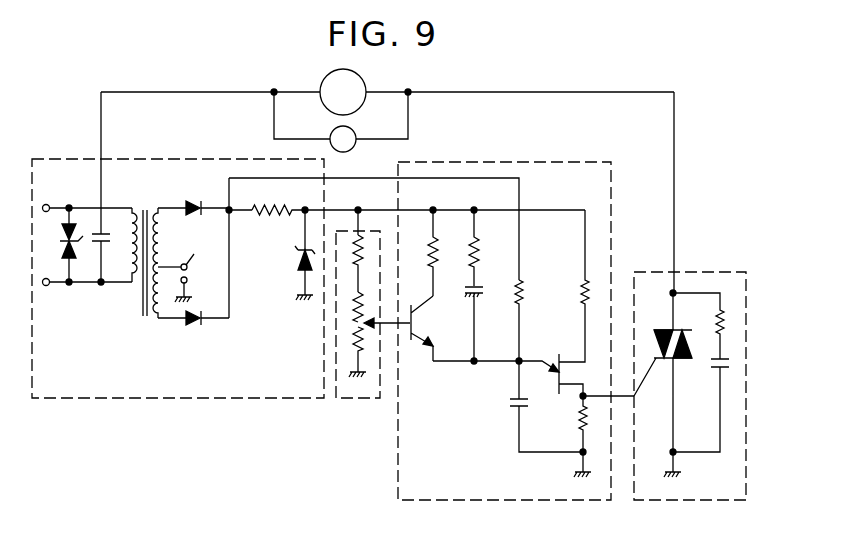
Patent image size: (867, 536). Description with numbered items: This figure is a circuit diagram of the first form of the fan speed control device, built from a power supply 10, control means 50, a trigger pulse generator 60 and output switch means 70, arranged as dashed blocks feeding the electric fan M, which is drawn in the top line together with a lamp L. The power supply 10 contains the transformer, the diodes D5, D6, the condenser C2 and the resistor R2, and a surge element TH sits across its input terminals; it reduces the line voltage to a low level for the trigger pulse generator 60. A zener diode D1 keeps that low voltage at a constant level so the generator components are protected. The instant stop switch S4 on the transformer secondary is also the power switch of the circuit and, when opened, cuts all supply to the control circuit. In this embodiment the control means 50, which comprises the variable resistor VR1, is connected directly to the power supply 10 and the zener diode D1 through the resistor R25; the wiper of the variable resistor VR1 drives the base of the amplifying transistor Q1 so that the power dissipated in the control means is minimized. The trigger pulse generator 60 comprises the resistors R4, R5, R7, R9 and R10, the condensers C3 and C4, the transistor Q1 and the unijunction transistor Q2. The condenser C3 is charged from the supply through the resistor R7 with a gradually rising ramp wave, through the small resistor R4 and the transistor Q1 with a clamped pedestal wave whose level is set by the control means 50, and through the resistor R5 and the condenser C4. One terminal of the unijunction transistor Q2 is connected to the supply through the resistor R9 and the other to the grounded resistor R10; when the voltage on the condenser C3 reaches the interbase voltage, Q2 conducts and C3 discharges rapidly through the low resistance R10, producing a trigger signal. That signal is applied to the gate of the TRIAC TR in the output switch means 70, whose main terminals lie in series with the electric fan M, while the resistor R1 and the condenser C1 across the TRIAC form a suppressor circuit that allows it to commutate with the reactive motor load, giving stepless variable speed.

The power supply 10 is at (49, 172).
The control means 50 is at (355, 398).
The trigger pulse generator 60 is at (577, 181).
The output switch means 70 is at (697, 286).
The electric fan M is at (387, 92).
The lamp L is at (341, 120).
The thermistor / surge element TH is at (57, 245).
The condenser C2 is at (105, 258).
The diode D5 is at (192, 199).
The diode D6 is at (194, 330).
The instant stop switch S4 is at (176, 268).
The resistor R2 is at (267, 200).
The zener diode D1 is at (292, 255).
The resistor R25 is at (352, 270).
The variable resistor VR1 is at (353, 330).
The transistor Q1 is at (426, 328).
The resistor R4 is at (443, 253).
The resistor R5 is at (485, 248).
The condenser C4 is at (484, 323).
The resistor R7 is at (530, 320).
The resistor R9 is at (572, 286).
The UJT (unijunction transistor) Q2 is at (551, 362).
The condenser C3 is at (546, 406).
The resistor R10 is at (571, 436).
The TRIAC TR is at (663, 385).
The resistor R1 is at (698, 326).
The condenser C1 is at (701, 405).